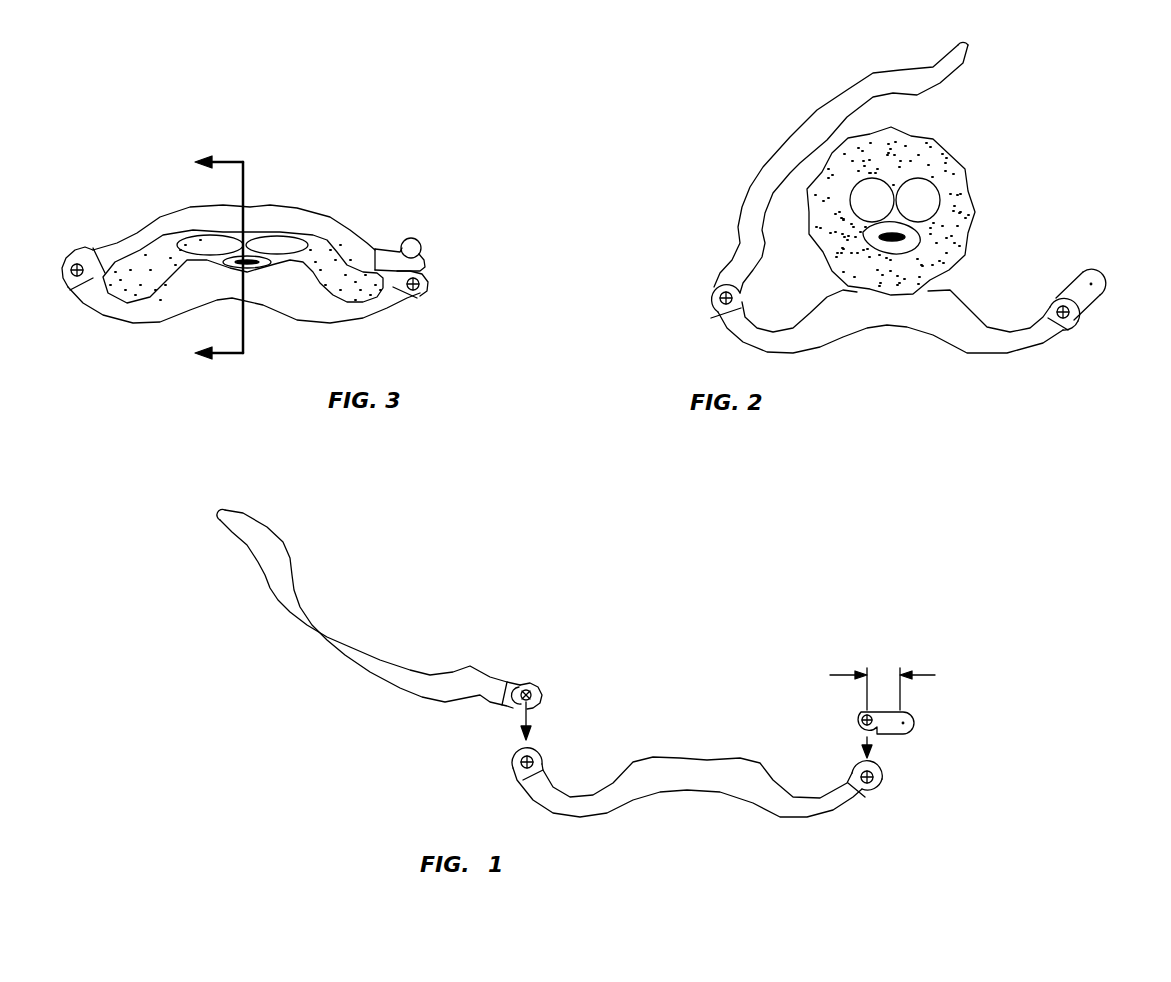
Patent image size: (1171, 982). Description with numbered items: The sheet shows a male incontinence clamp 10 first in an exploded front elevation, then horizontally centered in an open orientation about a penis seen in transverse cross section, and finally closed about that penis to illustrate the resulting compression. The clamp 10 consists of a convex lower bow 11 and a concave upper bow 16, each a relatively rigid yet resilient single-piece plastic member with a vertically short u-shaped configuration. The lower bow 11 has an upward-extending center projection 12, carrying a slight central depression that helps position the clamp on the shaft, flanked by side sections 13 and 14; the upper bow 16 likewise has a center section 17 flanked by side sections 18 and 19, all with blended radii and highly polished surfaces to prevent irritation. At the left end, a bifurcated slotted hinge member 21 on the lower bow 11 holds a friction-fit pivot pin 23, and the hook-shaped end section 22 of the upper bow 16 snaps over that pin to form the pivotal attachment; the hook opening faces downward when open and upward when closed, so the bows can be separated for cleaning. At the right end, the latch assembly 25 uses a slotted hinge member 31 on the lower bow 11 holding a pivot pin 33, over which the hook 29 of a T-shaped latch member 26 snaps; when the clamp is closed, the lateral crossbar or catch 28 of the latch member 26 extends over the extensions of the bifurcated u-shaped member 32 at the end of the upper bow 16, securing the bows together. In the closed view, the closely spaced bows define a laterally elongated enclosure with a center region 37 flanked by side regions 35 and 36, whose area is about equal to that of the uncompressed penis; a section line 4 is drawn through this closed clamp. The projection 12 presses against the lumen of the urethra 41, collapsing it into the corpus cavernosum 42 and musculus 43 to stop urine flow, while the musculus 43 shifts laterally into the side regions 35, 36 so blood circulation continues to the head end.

In FIG. 3, the section line 4- 4 is at (207, 257).
In FIG. 1, the male incontinence clamp 10 is at (703, 728).
In FIG. 2, the lower bow-shaped member 11 is at (910, 421).
In FIG. 1, the lower bow-shaped member 11 is at (710, 803).
In FIG. 1, the center section or projection 12 is at (654, 738).
In FIG. 1, the side section 13 is at (574, 846).
In FIG. 1, the side section 14 is at (786, 841).
In FIG. 2, the upper bow-shaped member 16 is at (773, 107).
In FIG. 1, the upper bow-shaped member 16 is at (358, 754).
In FIG. 1, the center section 17 is at (380, 611).
In FIG. 1, the side section 18 is at (461, 636).
In FIG. 1, the side section 19 is at (313, 542).
In FIG. 2, the pivotal hinge member 21 is at (692, 311).
In FIG. 1, the hook-shaped end section 22 is at (560, 678).
In FIG. 1, the pivot pin 23 is at (489, 778).
In FIG. 1, the latch assembly 25 is at (955, 741).
In FIG. 2, the T-shaped latch member 26 is at (1113, 298).
In FIG. 1, the T-shaped latch member 26 is at (921, 759).
In FIG. 1, the catch 28 is at (902, 708).
In FIG. 1, the hook 29 is at (830, 718).
In FIG. 2, the hinge member 31 is at (1093, 338).
In FIG. 1, the bifurcated u-shaped member 32 is at (195, 568).
In FIG. 1, the pivot pin 33 is at (891, 792).
In FIG. 3, the side region 35 is at (75, 241).
In FIG. 3, the side region 36 is at (401, 233).
In FIG. 3, the center region 37 is at (285, 203).
In FIG. 3, the lumen of urethra 41 is at (269, 306).
In FIG. 2, the lumen of urethra 41 is at (958, 234).
In FIG. 3, the corpus cavernosum 42 is at (208, 209).
In FIG. 2, the corpus cavernosum 42 is at (941, 185).
In FIG. 3, the musculus 43 is at (246, 299).
In FIG. 2, the musculus 43 is at (912, 204).